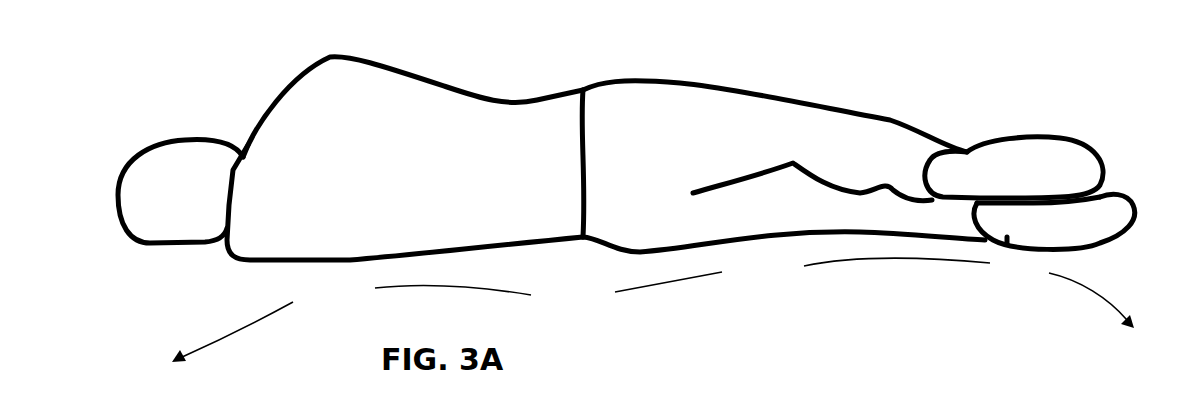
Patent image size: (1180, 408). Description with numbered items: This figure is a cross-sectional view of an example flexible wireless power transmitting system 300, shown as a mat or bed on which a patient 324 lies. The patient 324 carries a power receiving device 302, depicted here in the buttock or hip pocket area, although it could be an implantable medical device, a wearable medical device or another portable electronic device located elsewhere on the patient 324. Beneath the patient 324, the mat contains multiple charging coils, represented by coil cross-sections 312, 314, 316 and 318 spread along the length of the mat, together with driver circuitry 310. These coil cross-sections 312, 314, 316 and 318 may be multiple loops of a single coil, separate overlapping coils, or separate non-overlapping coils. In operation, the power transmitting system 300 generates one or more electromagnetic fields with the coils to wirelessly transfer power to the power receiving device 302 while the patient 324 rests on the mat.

The wireless power transmitting system 300 is at (151, 83).
The power receiving device 302 is at (551, 158).
The driver circuitry 310 is at (682, 297).
The coil cross-section 312 is at (573, 295).
The coil cross-section 314 is at (762, 270).
The coil cross-section 316 is at (1049, 295).
The coil cross-section 318 is at (273, 321).
The patient 324 is at (899, 108).